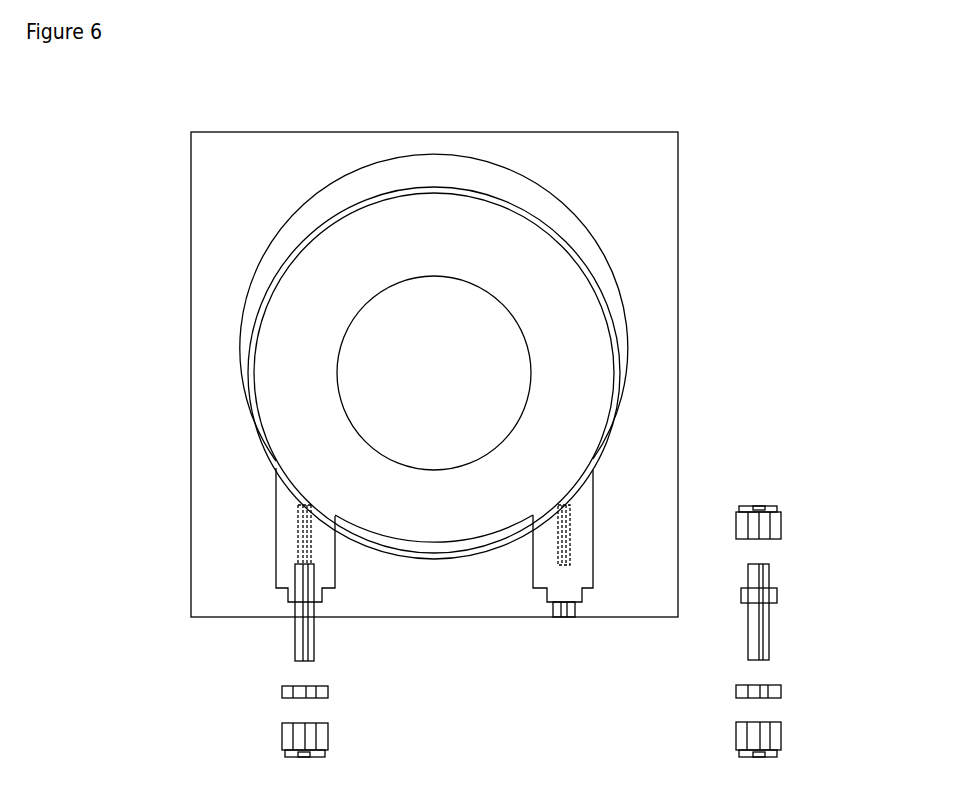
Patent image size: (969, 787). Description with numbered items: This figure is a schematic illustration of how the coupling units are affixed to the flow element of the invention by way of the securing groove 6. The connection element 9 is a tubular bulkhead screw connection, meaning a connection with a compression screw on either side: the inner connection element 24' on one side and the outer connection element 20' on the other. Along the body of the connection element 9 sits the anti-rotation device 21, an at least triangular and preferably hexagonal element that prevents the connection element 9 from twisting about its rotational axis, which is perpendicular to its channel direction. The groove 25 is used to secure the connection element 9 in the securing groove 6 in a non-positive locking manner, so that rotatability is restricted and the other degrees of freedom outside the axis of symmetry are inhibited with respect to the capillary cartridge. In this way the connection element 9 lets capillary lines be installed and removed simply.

The securing groove 6 is at (547, 597).
The inner connection element, compression screw embodiment 24' is at (797, 498).
The anti-rotation device 21 is at (777, 597).
The connection element 9 is at (771, 636).
The groove for securing the connection element 25 is at (781, 691).
The outer connection element, compression screw embodiment 20' is at (691, 739).